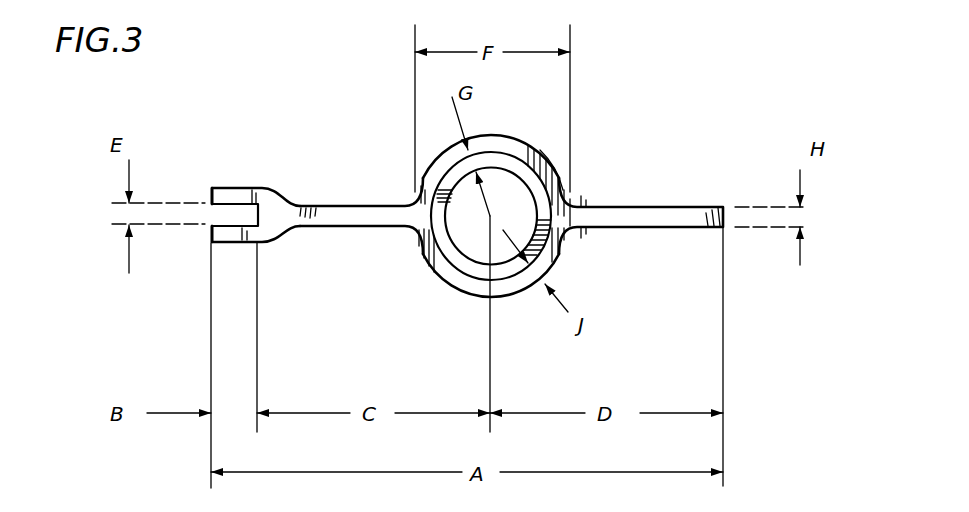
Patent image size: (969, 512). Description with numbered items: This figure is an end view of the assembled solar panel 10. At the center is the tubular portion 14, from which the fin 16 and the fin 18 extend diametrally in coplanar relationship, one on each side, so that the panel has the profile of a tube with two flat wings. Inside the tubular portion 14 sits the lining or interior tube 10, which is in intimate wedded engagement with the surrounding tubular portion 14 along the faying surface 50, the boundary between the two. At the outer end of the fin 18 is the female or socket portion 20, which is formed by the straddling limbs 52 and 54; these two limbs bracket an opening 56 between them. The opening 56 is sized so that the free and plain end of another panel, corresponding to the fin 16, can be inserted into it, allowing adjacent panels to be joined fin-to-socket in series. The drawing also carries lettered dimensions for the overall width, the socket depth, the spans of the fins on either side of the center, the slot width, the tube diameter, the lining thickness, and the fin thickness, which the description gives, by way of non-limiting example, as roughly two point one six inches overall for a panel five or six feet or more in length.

The solar panel 10 is at (548, 143).
The tubular portion 14 is at (558, 172).
The fin 16 is at (675, 228).
The fin 18 is at (372, 230).
The female or socket portion 20 is at (206, 229).
The faying surface 50 is at (438, 182).
The straddling limb 52 is at (228, 188).
The straddling limb 54 is at (238, 243).
The opening 56 is at (220, 212).